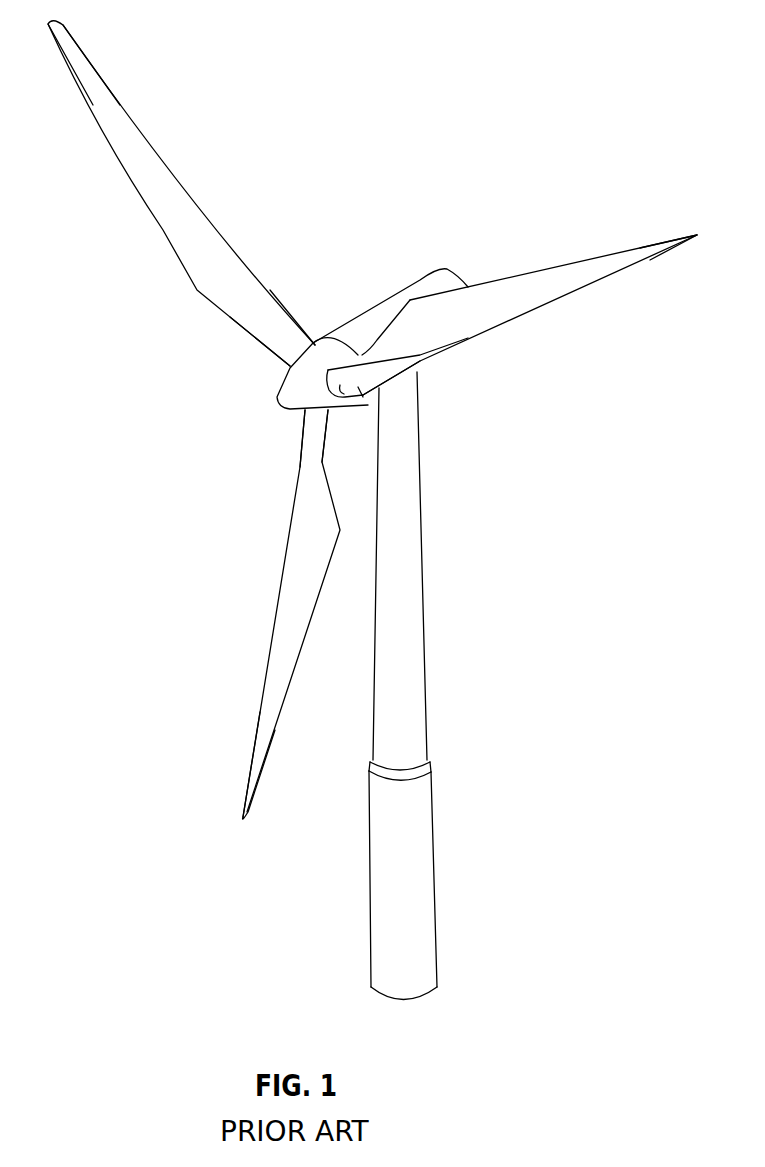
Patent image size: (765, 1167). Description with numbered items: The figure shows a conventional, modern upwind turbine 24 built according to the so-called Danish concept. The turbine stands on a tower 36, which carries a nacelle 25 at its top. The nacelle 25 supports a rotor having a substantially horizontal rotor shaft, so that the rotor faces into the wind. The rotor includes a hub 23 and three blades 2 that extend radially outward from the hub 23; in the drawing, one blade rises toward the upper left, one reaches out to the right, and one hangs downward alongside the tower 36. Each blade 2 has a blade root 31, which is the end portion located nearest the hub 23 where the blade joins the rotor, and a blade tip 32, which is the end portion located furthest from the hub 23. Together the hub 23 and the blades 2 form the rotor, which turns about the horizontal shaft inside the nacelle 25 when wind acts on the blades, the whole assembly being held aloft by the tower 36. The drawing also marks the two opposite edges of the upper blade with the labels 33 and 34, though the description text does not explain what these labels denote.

The blade 2 is at (372, 420).
The hub 23 is at (287, 400).
The upwind turbine 24 is at (372, 508).
The nacelle 25 is at (360, 326).
The blade root 31 is at (297, 357).
The blade tip 32 is at (85, 75).
The leading edge 33 is at (123, 165).
The trailing edge 34 is at (170, 168).
The tower 36 is at (416, 476).